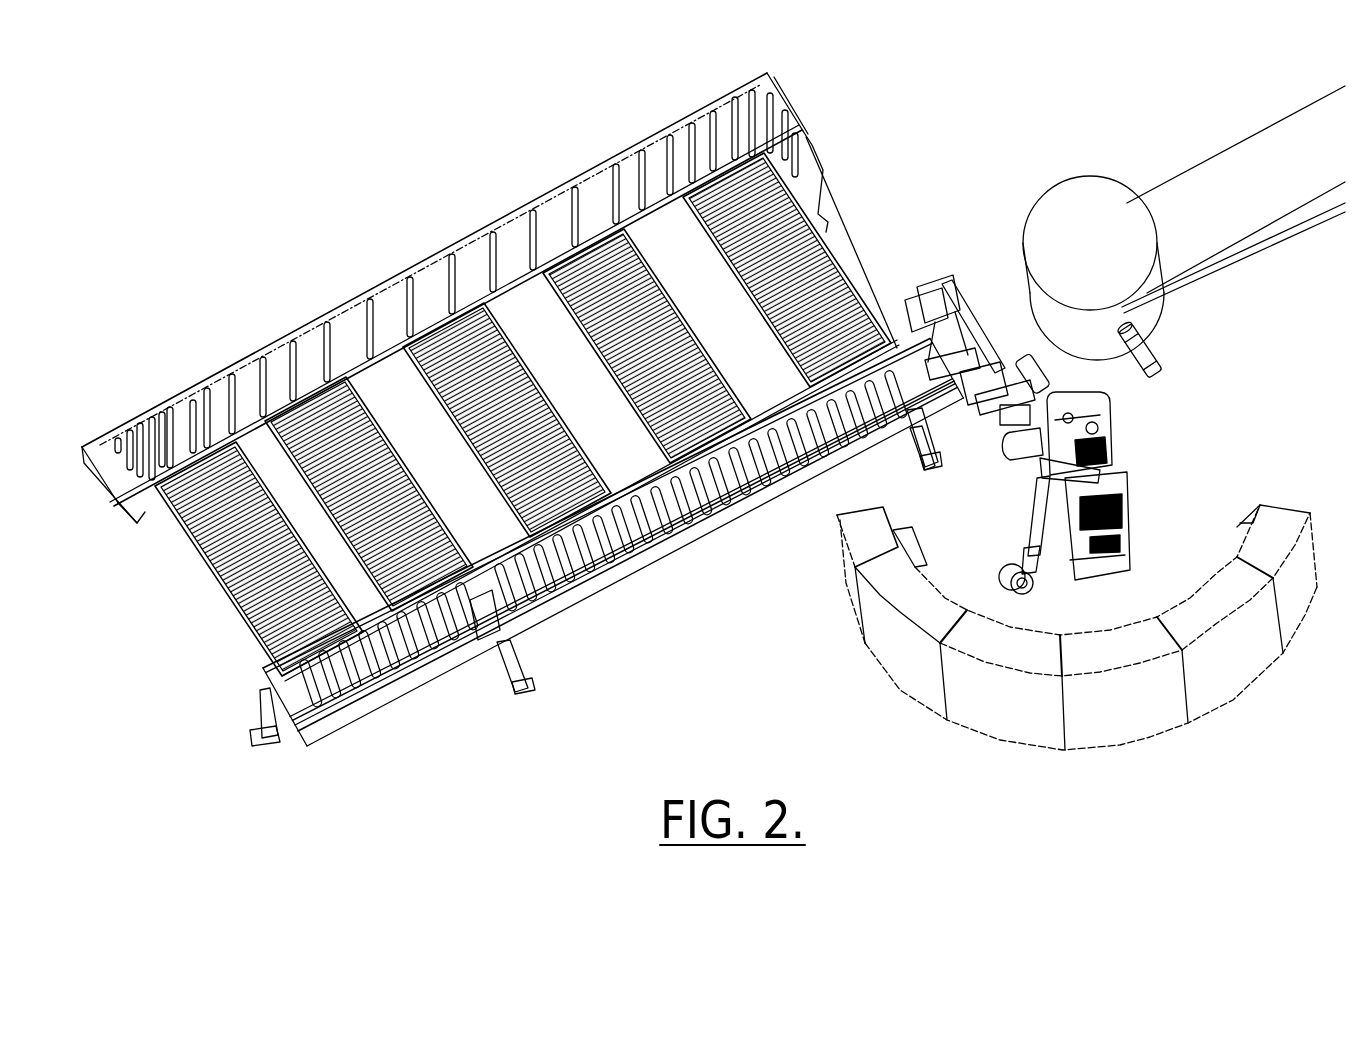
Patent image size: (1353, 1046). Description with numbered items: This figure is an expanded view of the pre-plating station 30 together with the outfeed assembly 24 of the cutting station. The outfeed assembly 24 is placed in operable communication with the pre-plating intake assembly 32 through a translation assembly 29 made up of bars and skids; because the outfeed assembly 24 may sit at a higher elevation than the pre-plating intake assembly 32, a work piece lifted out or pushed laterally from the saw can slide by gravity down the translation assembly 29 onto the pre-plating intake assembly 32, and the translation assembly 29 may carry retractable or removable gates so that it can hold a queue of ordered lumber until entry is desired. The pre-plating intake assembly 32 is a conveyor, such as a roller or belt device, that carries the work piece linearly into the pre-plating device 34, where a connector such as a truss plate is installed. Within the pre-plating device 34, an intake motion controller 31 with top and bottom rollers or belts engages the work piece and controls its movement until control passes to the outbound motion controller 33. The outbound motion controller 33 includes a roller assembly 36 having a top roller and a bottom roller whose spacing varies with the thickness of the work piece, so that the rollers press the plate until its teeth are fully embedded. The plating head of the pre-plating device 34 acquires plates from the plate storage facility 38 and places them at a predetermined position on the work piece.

The outfeed assembly 24 is at (500, 377).
The translation assembly 29 is at (800, 270).
The pre-plating station 30 is at (713, 423).
The intake motion controller 31 is at (978, 372).
The pre-plating intake assembly 32 is at (606, 543).
The outbound motion controller 33 is at (1185, 373).
The pre-plating device 34 is at (1101, 493).
The roller assembly 36 is at (1150, 223).
The plate storage facility 38 is at (1077, 639).